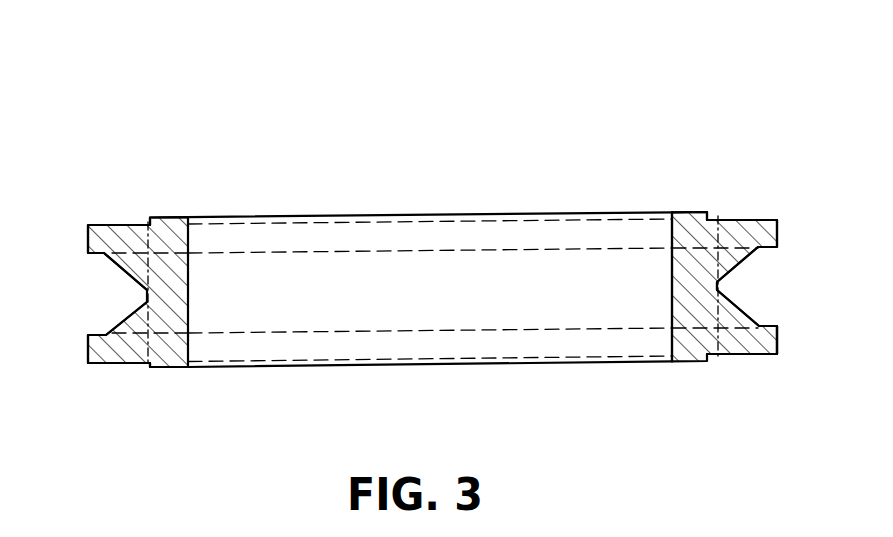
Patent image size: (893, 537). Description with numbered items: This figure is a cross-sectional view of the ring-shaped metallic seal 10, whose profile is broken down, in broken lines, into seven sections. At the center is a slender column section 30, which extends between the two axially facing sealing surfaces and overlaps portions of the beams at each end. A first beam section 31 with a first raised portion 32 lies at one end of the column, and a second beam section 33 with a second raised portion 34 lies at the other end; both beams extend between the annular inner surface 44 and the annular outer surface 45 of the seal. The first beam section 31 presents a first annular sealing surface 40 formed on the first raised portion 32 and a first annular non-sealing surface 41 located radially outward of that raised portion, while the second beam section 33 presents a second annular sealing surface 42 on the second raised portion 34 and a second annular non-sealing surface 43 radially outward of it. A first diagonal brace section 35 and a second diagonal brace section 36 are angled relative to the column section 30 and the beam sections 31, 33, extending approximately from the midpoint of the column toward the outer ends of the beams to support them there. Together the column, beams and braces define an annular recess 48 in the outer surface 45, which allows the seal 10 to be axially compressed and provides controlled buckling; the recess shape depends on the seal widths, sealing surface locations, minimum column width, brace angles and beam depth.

The metallic seal 10 is at (680, 142).
The slender column section 30 is at (166, 342).
The first beam section 31 is at (107, 360).
The first raised portion 32 is at (172, 367).
The second beam section 33 is at (112, 226).
The second raised portion 34 is at (172, 216).
The first diagonal brace section 35 is at (124, 316).
The second diagonal brace section 36 is at (119, 273).
The first annular sealing surface 40 is at (690, 362).
The first annular non-sealing surface 41 is at (750, 356).
The second annular sealing surface 42 is at (690, 212).
The second annular non-sealing surface 43 is at (745, 218).
The annular inner surface 44 is at (672, 280).
The annular outer surface 45 is at (777, 335).
The annular recess 48 is at (755, 286).